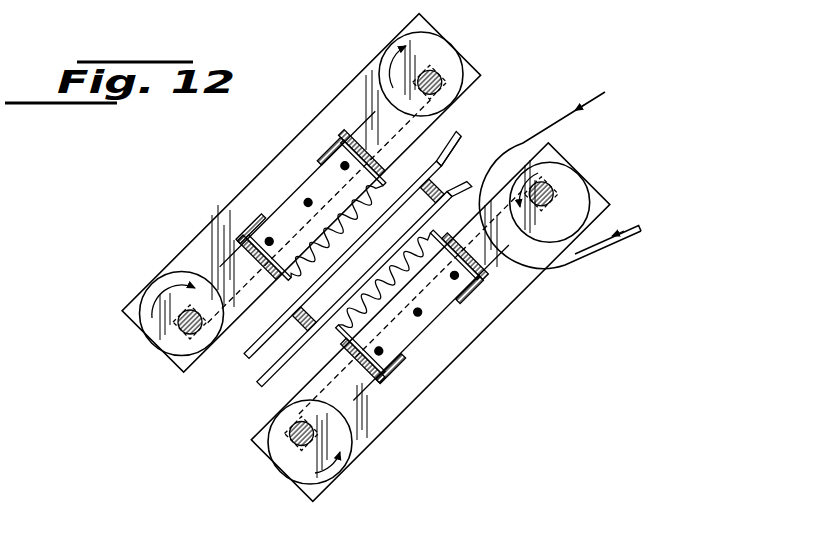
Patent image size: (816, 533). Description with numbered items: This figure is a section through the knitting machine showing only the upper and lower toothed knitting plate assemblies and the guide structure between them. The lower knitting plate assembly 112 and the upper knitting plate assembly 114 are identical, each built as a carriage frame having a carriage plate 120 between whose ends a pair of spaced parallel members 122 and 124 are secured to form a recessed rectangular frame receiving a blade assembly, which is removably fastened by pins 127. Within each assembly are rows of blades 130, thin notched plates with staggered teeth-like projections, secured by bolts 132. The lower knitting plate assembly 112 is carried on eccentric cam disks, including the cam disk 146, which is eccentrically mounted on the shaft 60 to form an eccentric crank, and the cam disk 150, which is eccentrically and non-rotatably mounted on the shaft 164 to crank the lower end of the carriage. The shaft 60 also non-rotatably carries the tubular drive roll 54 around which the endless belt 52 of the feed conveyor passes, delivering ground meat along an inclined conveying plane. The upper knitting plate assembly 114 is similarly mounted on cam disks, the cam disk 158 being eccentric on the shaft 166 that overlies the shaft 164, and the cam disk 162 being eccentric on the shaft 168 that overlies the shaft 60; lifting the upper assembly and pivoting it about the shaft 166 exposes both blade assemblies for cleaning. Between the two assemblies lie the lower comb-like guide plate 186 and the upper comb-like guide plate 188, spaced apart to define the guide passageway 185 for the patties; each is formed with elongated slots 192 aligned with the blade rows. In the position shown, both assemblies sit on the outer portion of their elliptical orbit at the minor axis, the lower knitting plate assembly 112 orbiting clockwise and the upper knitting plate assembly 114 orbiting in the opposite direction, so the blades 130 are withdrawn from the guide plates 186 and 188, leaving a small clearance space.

The endless belt 52 is at (588, 103).
The tubular drive roll 54 is at (575, 171).
The shaft 60 is at (550, 203).
The lower knitting plate assembly 112 is at (324, 340).
The upper knitting plate assembly 114 is at (286, 286).
The carriage plate 120 is at (263, 172).
The spaced parallel member 122 is at (243, 233).
The spaced parallel member 124 is at (334, 146).
The pin 127 is at (307, 197).
The blade 130 is at (387, 184).
The bolt 132 is at (272, 238).
The cam disk 146 is at (557, 238).
The cam disk 150 is at (340, 468).
The cam disk 158 is at (156, 340).
The cam disk 162 is at (440, 48).
The shaft 164 is at (296, 445).
The shaft 166 is at (190, 333).
The shaft 168 is at (441, 78).
The guide passageway 185 is at (466, 146).
The lower comb-like guide plate 186 is at (462, 178).
The upper comb-like guide plate 188 is at (456, 146).
The elongated slot 192 is at (357, 278).